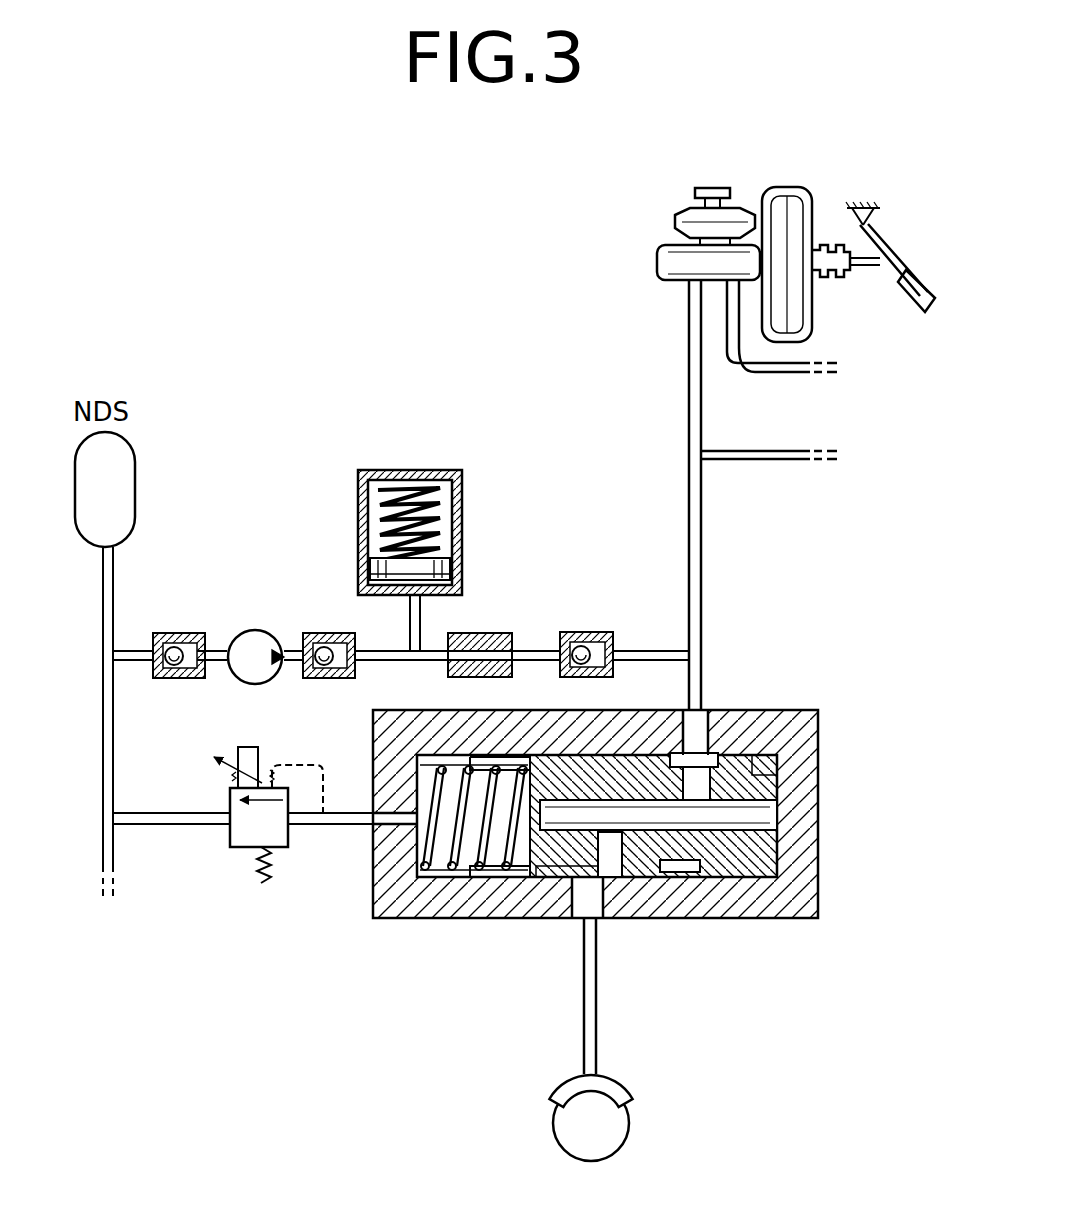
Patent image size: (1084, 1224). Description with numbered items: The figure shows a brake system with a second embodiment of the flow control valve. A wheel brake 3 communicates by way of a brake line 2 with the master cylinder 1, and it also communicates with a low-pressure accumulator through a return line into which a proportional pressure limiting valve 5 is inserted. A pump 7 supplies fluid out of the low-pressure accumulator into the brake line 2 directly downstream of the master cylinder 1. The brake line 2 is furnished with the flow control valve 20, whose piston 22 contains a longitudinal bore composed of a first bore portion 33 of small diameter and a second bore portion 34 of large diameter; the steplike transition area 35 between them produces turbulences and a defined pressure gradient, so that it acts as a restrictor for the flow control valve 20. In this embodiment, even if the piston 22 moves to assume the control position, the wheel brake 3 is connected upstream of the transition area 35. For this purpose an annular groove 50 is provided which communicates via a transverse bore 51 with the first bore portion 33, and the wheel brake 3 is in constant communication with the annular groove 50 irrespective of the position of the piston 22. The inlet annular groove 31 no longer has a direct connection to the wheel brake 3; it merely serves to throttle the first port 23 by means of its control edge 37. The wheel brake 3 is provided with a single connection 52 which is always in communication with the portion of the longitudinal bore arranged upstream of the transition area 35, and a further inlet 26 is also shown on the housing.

The master cylinder 1 is at (655, 246).
The brake line 2 is at (689, 389).
The wheel brake 3 is at (622, 1100).
The proportional pressure limiting valve 5 is at (236, 845).
The pump 7 is at (253, 647).
The flow control valve 20 is at (826, 800).
The piston 22 is at (762, 862).
The first port 23 is at (707, 712).
The pressure chamber inlet 26 is at (371, 826).
The inlet annular groove 31 is at (684, 732).
The first bore portion 33 is at (762, 822).
The second bore portion 34 is at (493, 854).
The transition area 35 is at (530, 856).
The control edge 37 is at (780, 766).
The annular groove 50 is at (547, 879).
The transverse bore 51 is at (654, 848).
The single connection 52 is at (597, 924).